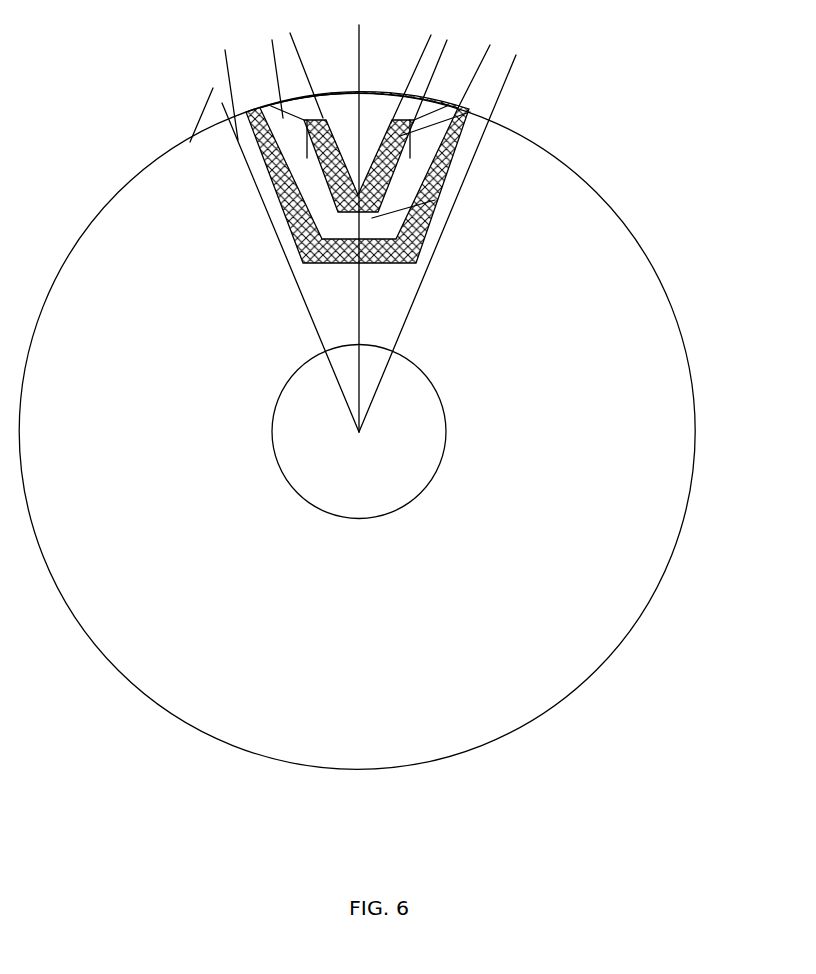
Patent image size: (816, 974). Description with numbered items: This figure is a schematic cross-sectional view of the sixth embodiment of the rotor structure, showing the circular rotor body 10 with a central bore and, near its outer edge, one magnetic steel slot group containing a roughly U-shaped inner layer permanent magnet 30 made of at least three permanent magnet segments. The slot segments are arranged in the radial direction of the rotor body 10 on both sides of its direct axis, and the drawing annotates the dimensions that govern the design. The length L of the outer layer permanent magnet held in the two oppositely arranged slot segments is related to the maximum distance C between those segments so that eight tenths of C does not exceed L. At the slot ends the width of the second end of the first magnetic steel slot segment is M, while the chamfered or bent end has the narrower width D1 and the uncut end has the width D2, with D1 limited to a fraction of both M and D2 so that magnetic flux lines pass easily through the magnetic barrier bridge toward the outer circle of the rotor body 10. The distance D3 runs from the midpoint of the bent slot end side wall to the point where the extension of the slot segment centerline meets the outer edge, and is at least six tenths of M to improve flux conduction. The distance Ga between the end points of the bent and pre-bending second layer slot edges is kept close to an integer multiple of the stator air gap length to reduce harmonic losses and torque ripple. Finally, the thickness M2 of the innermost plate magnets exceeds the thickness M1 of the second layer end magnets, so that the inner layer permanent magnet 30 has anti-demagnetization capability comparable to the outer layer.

The rotor body 10 is at (623, 440).
The inner layer permanent magnet 30 is at (419, 189).
The maximum distance between the two oppositely arranged magnetic steel slot segment C is at (410, 137).
The width of the second end of the first magnetic steel slot segment M is at (224, 80).
The width of the second end of the first bent slot D1 is at (340, 58).
The width of the end of the uncut portion of the magnetic steel slot D2 is at (290, 100).
The distance from the midpoint of the bent slot end side wall to the outer-edge inte D3 is at (360, 38).
The distance between end points of the bent and pre-bending second layer magnetic st Ga is at (362, 68).
The thickness of the plate permanent magnets at the ends of the second layer M1 is at (405, 168).
The thickness of the plate permanent magnets at two sides of the innermost layer M2 is at (357, 142).
The length of the outer layer permanent magnet in the two oppositely arranged slot s L is at (426, 128).